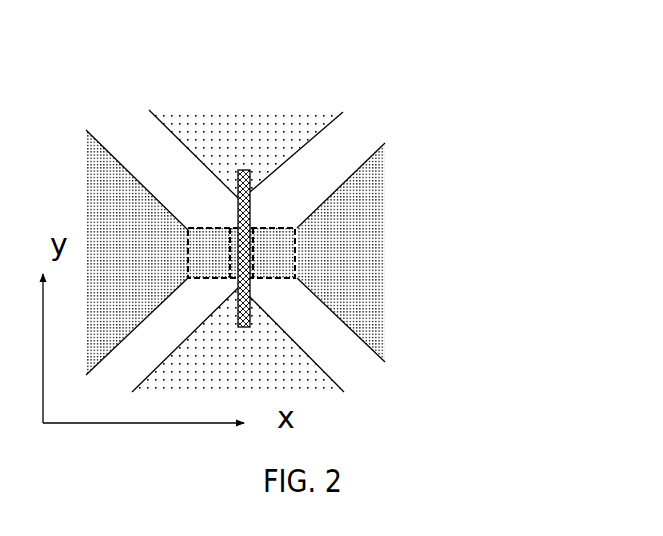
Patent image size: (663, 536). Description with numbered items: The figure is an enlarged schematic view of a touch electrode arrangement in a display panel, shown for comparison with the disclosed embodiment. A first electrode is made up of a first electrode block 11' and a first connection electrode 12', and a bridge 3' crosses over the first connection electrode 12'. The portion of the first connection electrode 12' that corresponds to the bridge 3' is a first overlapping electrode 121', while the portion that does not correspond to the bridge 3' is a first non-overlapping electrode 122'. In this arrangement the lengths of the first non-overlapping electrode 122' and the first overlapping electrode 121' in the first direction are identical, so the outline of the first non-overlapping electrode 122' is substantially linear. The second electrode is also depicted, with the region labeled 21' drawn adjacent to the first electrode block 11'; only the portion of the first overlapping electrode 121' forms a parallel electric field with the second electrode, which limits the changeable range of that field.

The bridge 3' is at (371, 182).
The first electrode block 11' is at (313, 229).
The second electrode 21' is at (286, 206).
The first connection electrode 12' is at (375, 295).
The first overlapping electrode 121' is at (356, 295).
The first non-overlapping electrode 122' is at (335, 268).